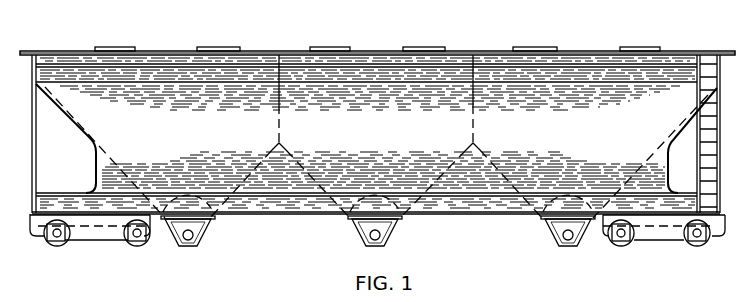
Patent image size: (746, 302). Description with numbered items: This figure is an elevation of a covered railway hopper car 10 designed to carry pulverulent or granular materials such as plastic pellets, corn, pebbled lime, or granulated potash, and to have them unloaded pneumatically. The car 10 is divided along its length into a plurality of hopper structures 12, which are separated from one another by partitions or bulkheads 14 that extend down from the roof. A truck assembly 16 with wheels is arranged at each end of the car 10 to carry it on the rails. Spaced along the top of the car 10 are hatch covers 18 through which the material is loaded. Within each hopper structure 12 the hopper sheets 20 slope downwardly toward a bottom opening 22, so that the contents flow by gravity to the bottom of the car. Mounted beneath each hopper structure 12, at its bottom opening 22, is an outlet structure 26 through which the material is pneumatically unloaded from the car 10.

The covered railway hopper car 10 is at (584, 47).
The hopper structure 12 is at (185, 155).
The partition or bulkhead 14 is at (283, 130).
The truck assembly 16 is at (92, 241).
The hatch cover 18 is at (110, 46).
The slope sheet 20 is at (89, 138).
The bottom opening 22 is at (218, 208).
The outlet structure 26 is at (196, 238).